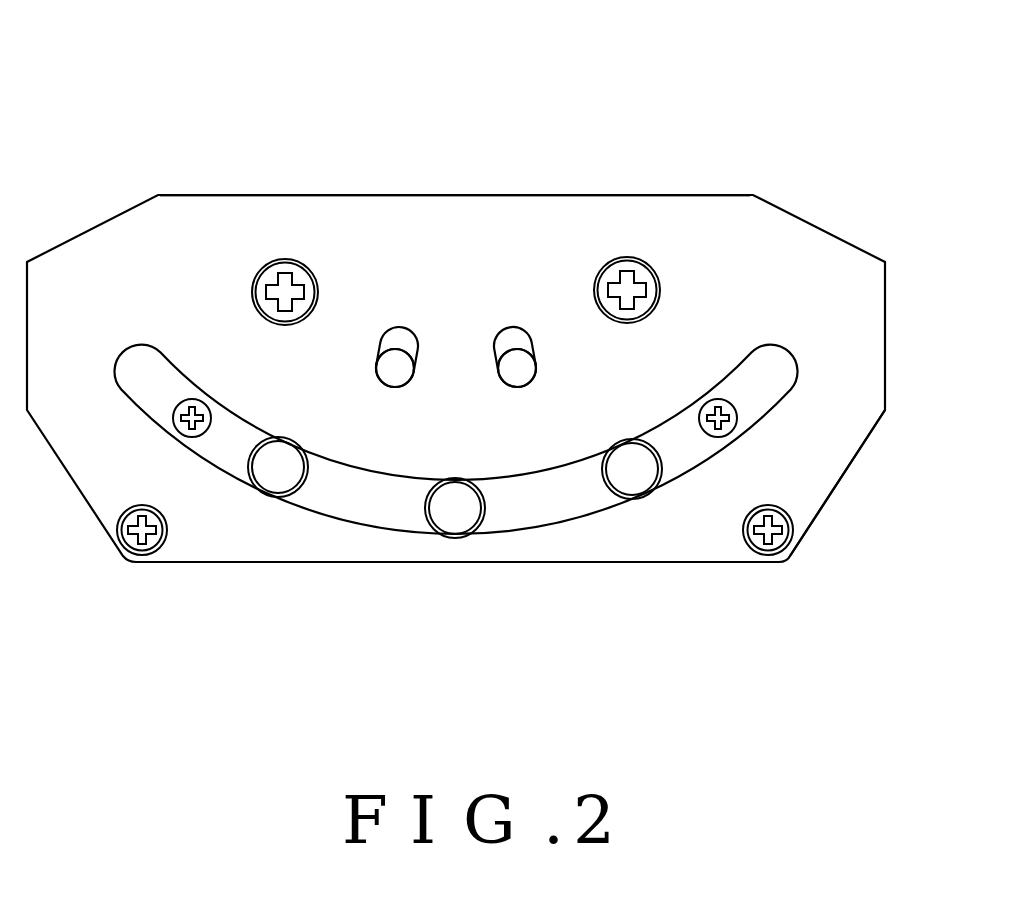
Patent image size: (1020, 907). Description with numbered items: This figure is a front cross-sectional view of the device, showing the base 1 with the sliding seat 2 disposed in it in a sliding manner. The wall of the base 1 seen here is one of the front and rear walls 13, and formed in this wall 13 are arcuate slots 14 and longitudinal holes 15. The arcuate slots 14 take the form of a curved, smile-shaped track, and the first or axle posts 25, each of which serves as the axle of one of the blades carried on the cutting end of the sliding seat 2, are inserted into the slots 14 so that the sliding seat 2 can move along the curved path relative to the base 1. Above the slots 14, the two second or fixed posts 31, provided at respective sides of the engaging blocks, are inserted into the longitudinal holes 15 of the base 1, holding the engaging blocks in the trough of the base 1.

The base 1 is at (118, 210).
The sliding seat 2 is at (565, 493).
The front and rear walls 13 is at (720, 303).
The arcuate slots 14 is at (770, 410).
The longitudinal holes 15 is at (513, 343).
The first or axle post 25 is at (455, 512).
The second or fixed posts 31 is at (385, 367).